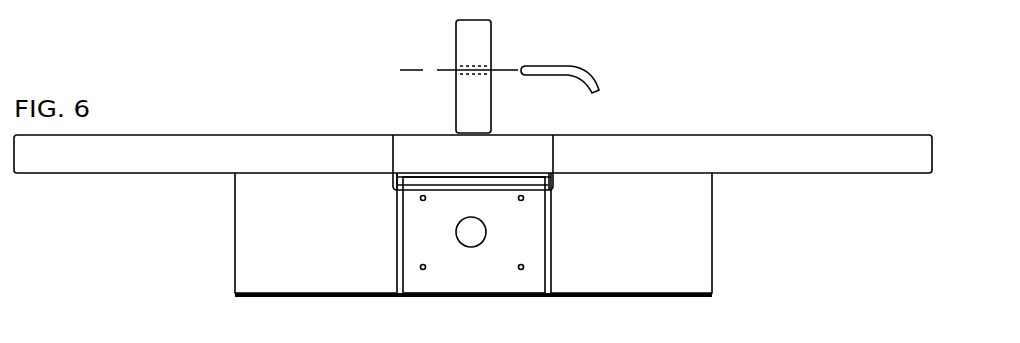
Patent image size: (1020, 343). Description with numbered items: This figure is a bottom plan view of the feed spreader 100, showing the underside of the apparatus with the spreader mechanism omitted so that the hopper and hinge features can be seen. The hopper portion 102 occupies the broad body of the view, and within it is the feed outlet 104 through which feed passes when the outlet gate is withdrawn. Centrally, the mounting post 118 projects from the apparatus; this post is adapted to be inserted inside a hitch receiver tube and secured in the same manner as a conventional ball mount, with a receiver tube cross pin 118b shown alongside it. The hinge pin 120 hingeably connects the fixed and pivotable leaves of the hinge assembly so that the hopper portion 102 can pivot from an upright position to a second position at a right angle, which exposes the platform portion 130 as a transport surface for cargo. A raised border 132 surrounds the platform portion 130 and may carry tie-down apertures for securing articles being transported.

The feed dispensing apparatus 100 is at (726, 72).
The hopper portion 102 is at (252, 260).
The outlet 104 is at (472, 248).
The mounting post 118 is at (464, 35).
The receiver tube cross pin 118b is at (552, 67).
The hinge pin 120 is at (398, 197).
The platform portion 130 is at (265, 133).
The raised border 132 is at (832, 134).